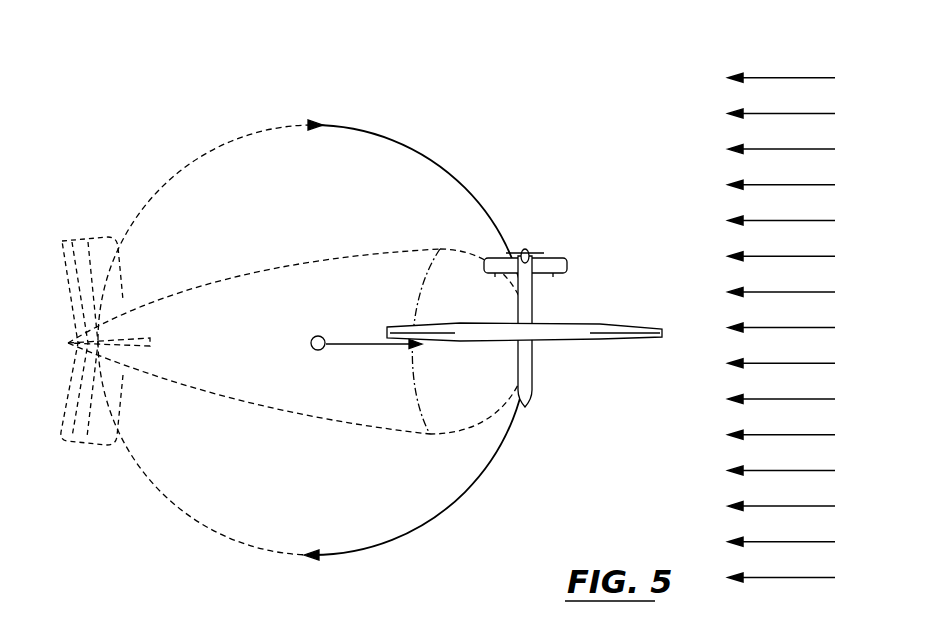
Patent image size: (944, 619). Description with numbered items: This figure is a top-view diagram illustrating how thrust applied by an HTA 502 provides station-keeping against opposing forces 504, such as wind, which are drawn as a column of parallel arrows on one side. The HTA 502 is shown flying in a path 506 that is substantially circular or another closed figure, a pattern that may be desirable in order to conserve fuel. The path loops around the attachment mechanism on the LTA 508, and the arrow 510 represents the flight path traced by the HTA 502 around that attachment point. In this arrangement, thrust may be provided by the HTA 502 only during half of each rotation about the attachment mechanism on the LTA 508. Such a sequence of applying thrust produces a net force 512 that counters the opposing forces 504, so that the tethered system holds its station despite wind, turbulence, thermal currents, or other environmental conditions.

The HTA 502 is at (567, 262).
The opposing forces 504 is at (752, 77).
The flight path 506 is at (273, 132).
The LTA 508 is at (84, 240).
The arrow 510 is at (398, 538).
The net force 512 is at (345, 343).